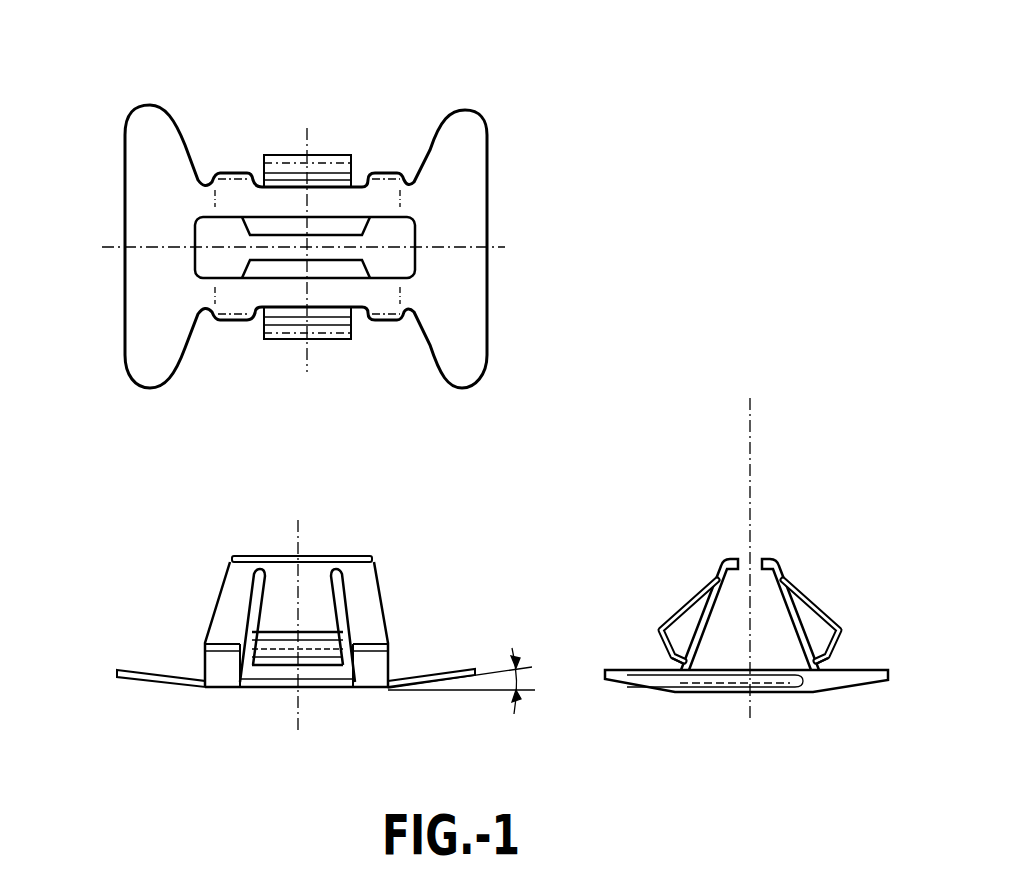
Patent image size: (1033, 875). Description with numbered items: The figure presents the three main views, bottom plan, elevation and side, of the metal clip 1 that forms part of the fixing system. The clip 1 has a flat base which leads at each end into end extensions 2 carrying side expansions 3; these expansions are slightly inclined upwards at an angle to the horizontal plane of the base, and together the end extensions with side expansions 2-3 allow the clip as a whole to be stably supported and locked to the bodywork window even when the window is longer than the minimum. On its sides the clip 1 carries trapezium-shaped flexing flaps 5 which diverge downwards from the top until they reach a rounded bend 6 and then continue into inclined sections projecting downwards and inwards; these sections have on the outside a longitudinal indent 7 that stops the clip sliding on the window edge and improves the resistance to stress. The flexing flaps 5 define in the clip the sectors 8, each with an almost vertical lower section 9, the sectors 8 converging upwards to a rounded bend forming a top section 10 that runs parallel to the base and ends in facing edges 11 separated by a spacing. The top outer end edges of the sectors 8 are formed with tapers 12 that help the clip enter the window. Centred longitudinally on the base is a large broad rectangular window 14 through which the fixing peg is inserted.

The metal clip 1 is at (532, 92).
The end extensions 2 is at (130, 190).
The side expansions 3 is at (150, 122).
The trapezium-shaped flexing flaps 5 is at (326, 168).
The rounded bend 6 is at (660, 627).
The longitudinal indent 7 is at (672, 658).
The sectors 8 is at (228, 183).
The lower section 9 is at (222, 673).
The top section 10 is at (308, 555).
The facing edges 11 is at (368, 261).
The tapers 12 is at (250, 262).
The rectangular window 14 is at (417, 225).
The end extensions with side expansions 2-3 is at (145, 668).